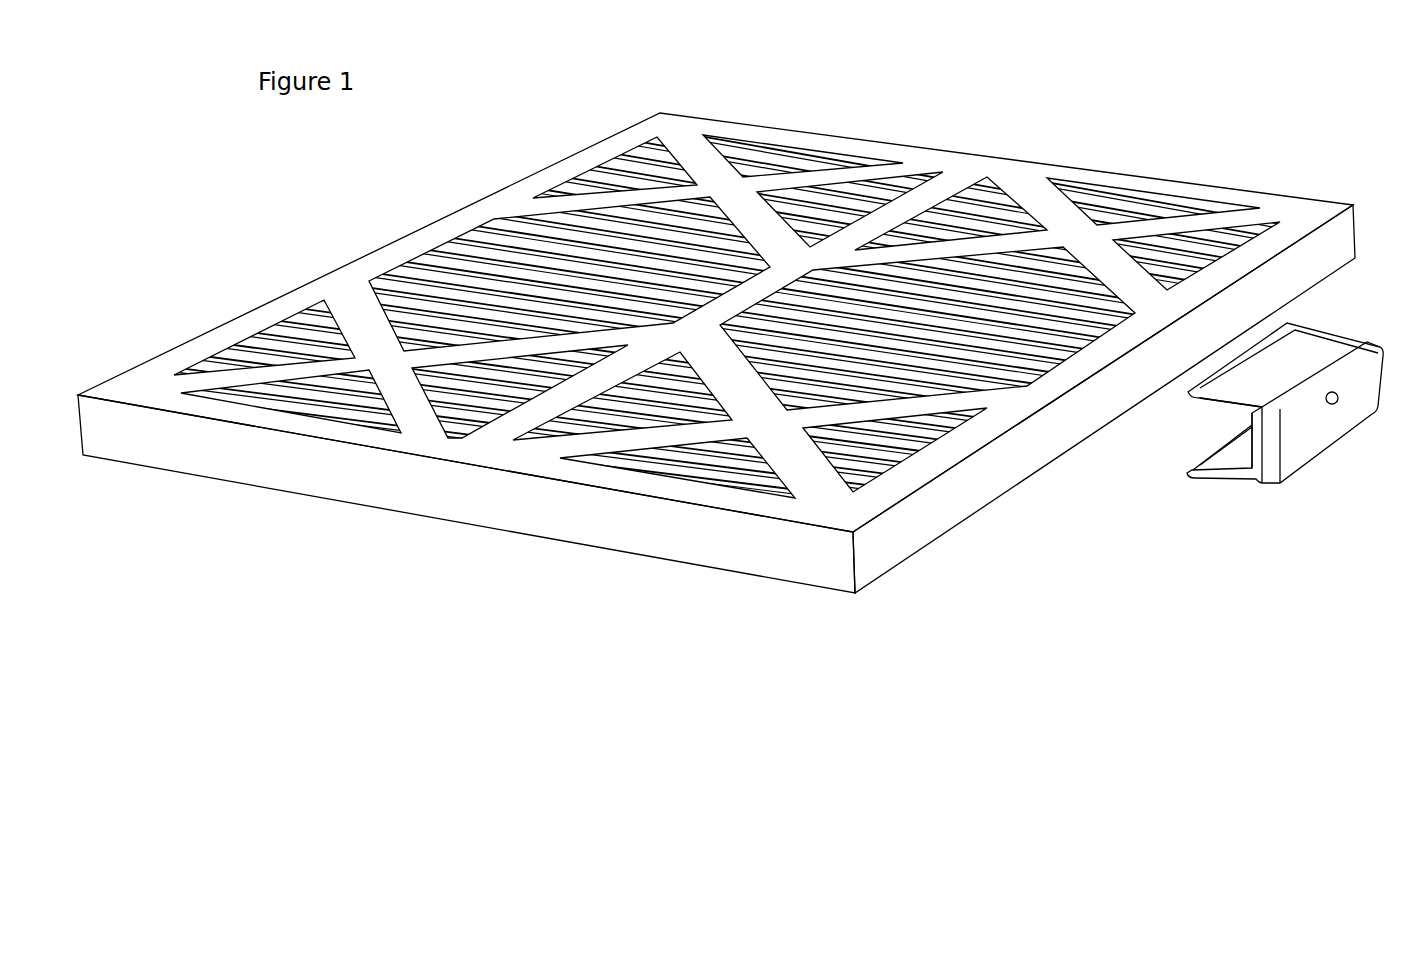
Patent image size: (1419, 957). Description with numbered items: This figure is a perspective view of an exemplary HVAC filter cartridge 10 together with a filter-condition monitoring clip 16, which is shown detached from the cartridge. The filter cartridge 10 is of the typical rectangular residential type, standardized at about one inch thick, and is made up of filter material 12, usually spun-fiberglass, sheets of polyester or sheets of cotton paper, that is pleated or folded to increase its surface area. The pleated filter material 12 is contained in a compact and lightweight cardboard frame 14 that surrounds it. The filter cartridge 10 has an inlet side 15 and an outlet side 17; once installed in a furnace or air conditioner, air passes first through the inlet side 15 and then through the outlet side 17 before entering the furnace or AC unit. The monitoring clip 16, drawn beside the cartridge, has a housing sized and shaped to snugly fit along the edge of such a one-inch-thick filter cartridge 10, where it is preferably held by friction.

The filter cartridge 10 is at (1346, 168).
The filter material 12 is at (1103, 210).
The cardboard frame 14 is at (652, 530).
The inlet side 15 is at (757, 144).
The monitoring clip 16 is at (1281, 530).
The outlet side 17 is at (430, 530).